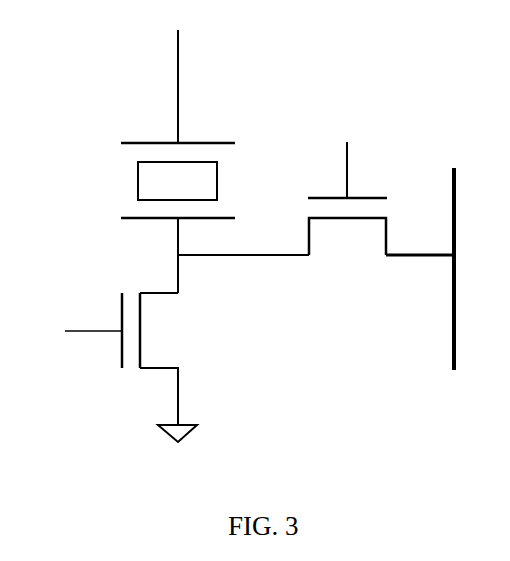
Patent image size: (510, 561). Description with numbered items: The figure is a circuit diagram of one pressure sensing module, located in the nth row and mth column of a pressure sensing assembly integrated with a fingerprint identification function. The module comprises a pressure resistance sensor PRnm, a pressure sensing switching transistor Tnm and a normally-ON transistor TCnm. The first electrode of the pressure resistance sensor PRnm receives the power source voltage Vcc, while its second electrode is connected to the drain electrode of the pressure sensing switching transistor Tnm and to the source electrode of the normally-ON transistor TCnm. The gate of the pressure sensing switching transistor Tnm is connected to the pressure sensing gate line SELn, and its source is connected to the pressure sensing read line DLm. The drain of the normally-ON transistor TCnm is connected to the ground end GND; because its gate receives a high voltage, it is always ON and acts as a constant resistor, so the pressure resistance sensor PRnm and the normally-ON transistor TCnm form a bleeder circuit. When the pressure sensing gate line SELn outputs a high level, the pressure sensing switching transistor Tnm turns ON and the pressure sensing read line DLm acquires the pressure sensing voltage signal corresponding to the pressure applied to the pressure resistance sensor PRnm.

The power source voltage Vcc is at (204, 81).
The pressure resistance sensor PRnm is at (138, 218).
The normally-ON transistor TCnm is at (175, 359).
The ground end GND is at (177, 451).
The pressure sensing gate line SELn is at (214, 222).
The pressure sensing switching transistor Tnm is at (316, 237).
The pressure sensing read line DLm is at (460, 255).